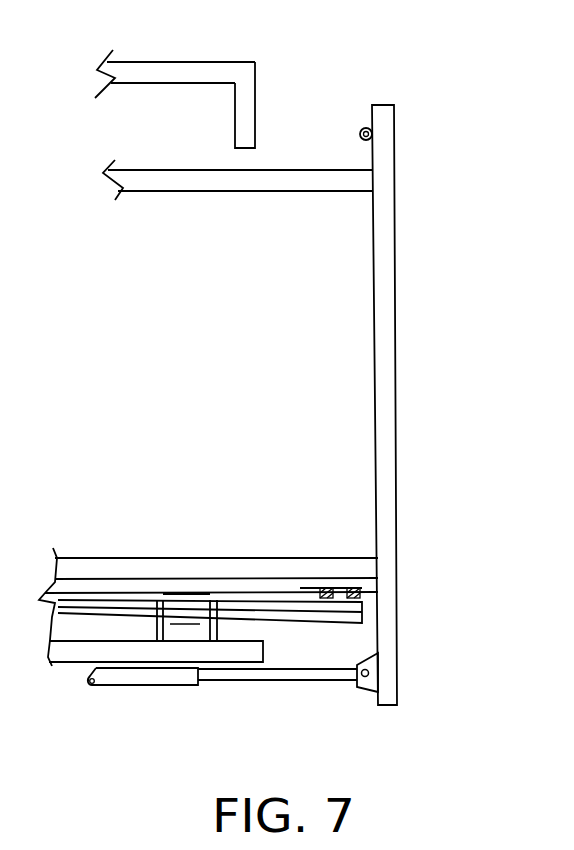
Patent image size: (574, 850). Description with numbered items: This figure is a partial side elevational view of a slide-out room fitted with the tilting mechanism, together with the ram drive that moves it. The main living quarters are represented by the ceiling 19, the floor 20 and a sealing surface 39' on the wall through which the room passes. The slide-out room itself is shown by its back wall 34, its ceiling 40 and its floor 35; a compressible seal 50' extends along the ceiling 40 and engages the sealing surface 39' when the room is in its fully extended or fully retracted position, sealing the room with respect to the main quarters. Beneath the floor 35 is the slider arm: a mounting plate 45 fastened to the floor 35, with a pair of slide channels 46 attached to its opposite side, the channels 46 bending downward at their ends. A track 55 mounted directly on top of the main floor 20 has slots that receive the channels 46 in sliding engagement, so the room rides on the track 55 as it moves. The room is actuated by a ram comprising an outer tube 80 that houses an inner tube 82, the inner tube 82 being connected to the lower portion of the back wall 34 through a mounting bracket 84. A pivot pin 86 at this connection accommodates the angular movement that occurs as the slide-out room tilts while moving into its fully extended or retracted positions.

The ceiling 19 is at (213, 78).
The sealing surface 39' is at (283, 83).
The ceiling 40 is at (282, 170).
The compressible seal 50' is at (342, 105).
The back wall 34 is at (397, 370).
The floor 35 is at (157, 558).
The mounting plate 45 is at (370, 583).
The slide channels 46 is at (362, 612).
The track 55 is at (187, 617).
The floor 20 is at (70, 663).
The outer tube 80 is at (143, 686).
The inner tube 82 is at (245, 681).
The mounting bracket 84 is at (357, 690).
The pivot pin 86 is at (370, 674).